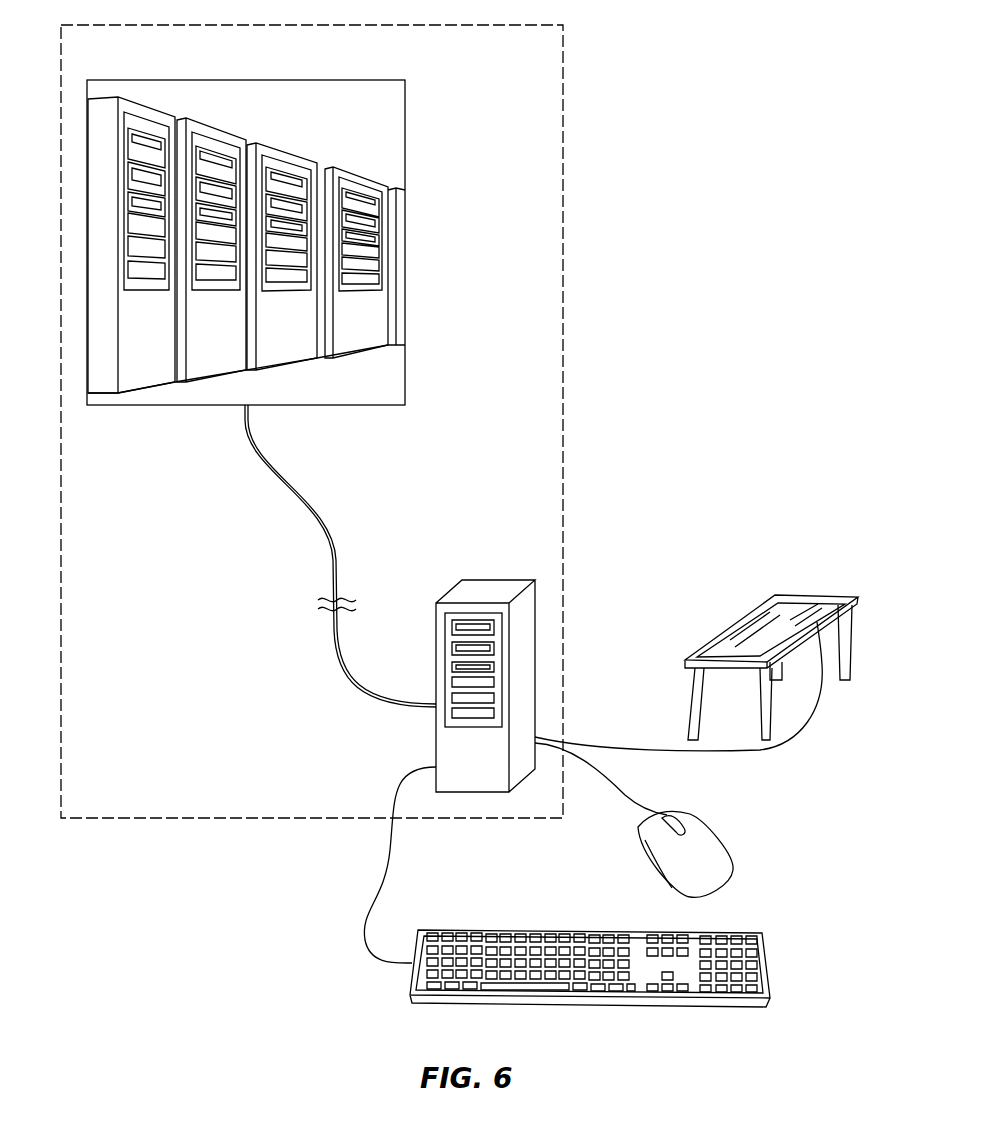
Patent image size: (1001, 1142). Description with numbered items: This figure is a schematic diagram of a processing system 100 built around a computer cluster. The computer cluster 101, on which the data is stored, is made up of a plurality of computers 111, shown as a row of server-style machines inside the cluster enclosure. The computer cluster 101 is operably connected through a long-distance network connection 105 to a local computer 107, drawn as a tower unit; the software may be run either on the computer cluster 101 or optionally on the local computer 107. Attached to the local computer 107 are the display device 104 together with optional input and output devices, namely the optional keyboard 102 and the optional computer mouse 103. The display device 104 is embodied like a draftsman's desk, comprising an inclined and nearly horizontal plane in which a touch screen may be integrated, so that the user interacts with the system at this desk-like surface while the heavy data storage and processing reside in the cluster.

The processing system 100 is at (563, 178).
The computer cluster 101 is at (246, 252).
The computers 111 is at (147, 98).
The long-distance network connection 105 is at (335, 645).
The local computer 107 is at (485, 588).
The display device 104 is at (782, 605).
The computer mouse 103 is at (720, 838).
The keyboard 102 is at (593, 932).